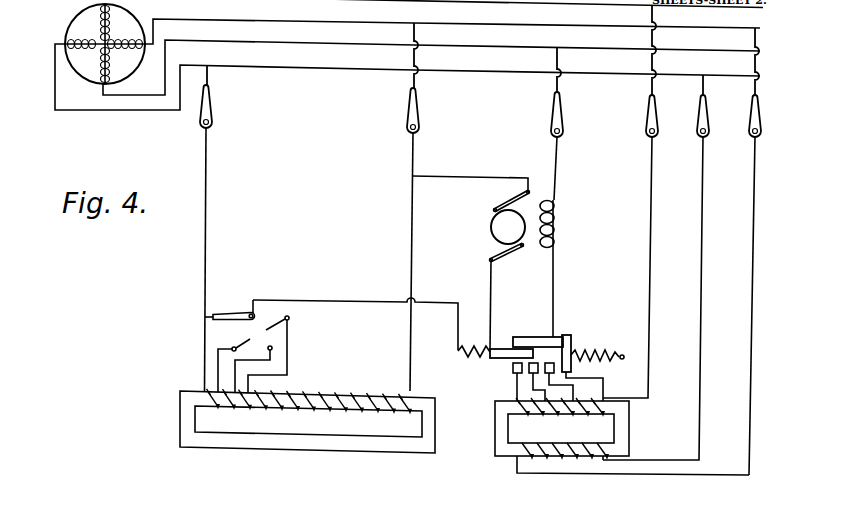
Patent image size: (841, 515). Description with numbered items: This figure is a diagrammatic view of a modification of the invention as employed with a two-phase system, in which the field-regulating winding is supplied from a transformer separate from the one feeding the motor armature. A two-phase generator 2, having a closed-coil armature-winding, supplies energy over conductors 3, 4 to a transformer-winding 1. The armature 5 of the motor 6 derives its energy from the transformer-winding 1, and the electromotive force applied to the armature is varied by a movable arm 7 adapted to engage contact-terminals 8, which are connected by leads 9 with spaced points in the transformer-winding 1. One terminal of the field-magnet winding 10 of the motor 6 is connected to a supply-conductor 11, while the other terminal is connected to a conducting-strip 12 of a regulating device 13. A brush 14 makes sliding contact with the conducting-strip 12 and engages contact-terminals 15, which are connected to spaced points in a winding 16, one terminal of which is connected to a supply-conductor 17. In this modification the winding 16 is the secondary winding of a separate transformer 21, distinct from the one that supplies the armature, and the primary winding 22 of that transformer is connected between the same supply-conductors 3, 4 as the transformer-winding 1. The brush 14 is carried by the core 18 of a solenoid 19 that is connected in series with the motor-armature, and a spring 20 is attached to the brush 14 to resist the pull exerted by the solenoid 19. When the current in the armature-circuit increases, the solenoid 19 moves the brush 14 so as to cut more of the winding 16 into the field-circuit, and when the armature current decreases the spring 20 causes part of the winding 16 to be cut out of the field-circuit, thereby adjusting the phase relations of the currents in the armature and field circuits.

The transformer-winding 1 is at (325, 392).
The two-phase generator 2 is at (68, 25).
The conductor 3 is at (501, 74).
The conductor 4 is at (500, 24).
The armature 5 is at (490, 227).
The motor 6 is at (540, 198).
The movable arm 7 is at (230, 312).
The contact-terminals 8 is at (260, 333).
The leads 9 is at (288, 350).
The field-magnet winding 10 is at (546, 215).
The supply-conductor 11 is at (503, 48).
The conducting-strip 12 is at (533, 337).
The regulating device 13 is at (587, 368).
The brush 14 is at (566, 336).
The contact-terminals 15 is at (512, 368).
The winding 16 is at (515, 386).
The supply-conductor 17 is at (503, 3).
The core 18 is at (502, 347).
The solenoid 19 is at (458, 352).
The spring 20 is at (617, 351).
The separate transformer 21 is at (495, 442).
The primary winding 22 is at (515, 456).